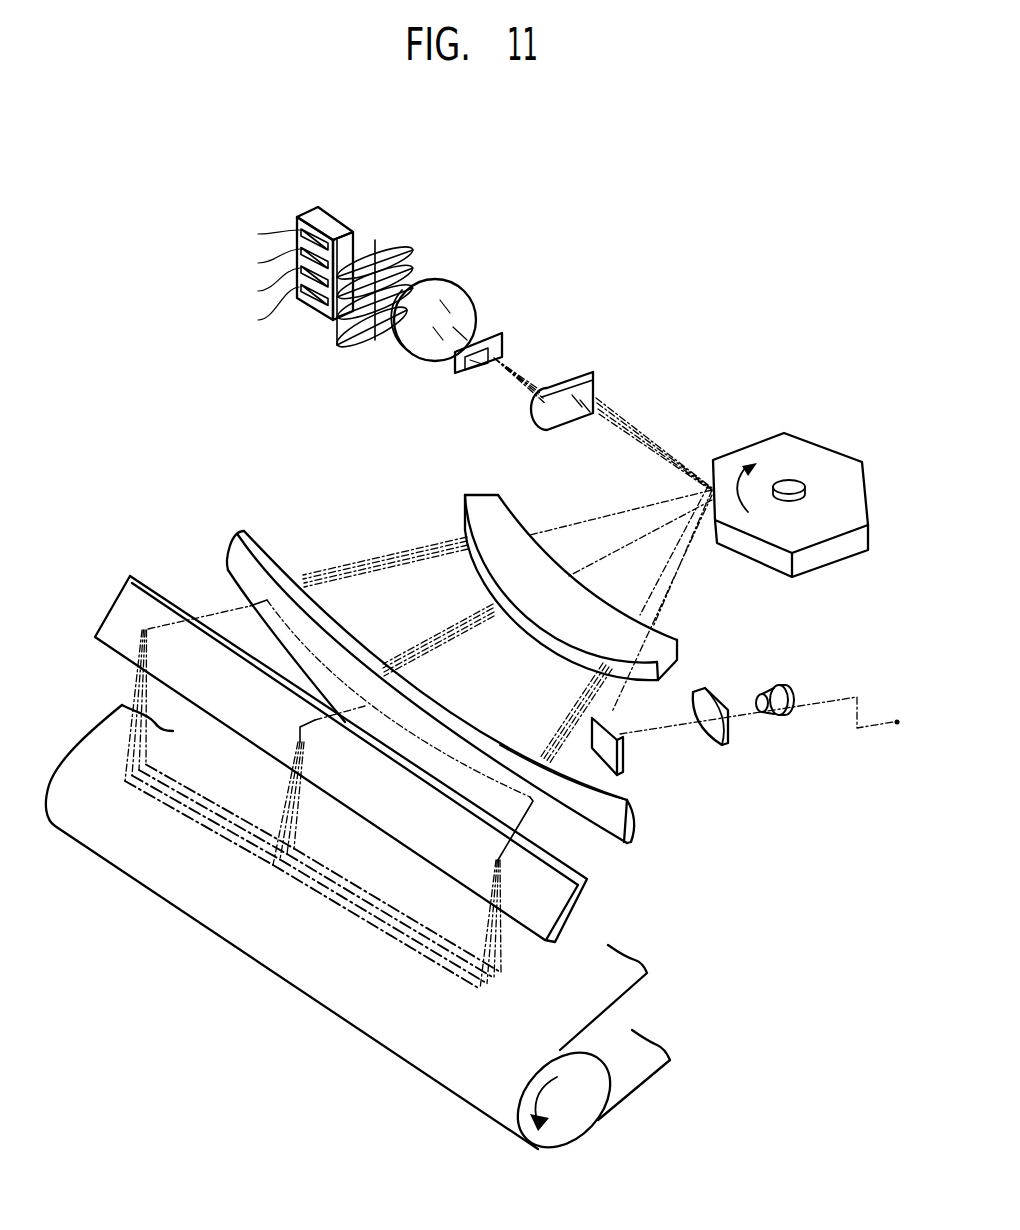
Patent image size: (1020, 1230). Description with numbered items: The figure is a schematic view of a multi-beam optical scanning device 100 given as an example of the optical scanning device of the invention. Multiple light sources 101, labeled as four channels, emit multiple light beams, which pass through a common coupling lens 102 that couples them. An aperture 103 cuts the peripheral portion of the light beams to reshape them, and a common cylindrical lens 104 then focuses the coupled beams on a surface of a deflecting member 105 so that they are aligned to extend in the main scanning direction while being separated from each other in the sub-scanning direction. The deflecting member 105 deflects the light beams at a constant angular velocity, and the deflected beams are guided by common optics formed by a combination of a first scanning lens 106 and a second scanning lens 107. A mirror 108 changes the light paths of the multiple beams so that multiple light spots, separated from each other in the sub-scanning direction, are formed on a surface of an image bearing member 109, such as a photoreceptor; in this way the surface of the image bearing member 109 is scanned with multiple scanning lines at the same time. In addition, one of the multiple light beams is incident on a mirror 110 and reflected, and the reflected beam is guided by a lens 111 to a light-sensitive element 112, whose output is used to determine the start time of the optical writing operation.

The multi-beam optical scanning device 100 is at (722, 220).
The light sources 101 is at (335, 214).
The coupling lens 102 is at (463, 302).
The aperture 103 is at (530, 332).
The cylindrical lens 104 is at (593, 397).
The deflecting member 105 is at (812, 453).
The first scanning lens 106 is at (498, 508).
The second scanning lens 107 is at (266, 558).
The mirror 108 is at (155, 588).
The image bearing member 109 is at (618, 992).
The mirror 110 is at (625, 758).
The lens 111 is at (723, 745).
The light-sensitive element 112 is at (773, 717).